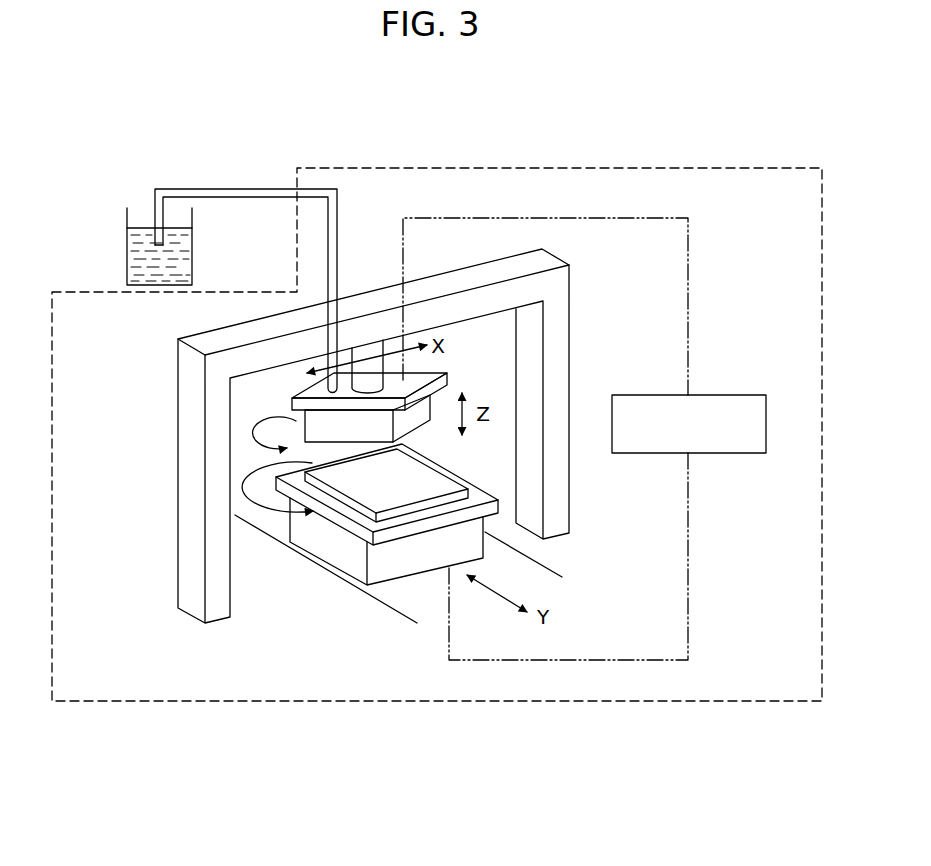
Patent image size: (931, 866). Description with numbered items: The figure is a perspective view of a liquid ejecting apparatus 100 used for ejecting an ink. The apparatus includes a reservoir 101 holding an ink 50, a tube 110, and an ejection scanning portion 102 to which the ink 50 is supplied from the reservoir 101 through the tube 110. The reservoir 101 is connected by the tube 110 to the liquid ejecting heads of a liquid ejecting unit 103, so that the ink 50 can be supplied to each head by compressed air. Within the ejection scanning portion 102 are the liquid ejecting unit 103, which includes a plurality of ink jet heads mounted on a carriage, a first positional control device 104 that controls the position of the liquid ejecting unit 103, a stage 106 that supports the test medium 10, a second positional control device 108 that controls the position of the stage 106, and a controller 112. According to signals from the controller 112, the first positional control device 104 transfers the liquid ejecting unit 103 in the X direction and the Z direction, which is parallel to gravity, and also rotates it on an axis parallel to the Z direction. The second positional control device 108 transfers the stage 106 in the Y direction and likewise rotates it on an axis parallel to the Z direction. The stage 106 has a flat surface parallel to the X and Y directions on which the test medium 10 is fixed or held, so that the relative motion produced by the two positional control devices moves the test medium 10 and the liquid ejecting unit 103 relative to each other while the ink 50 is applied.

The liquid ejecting apparatus 100 is at (596, 137).
The reservoir 101 is at (127, 250).
The ink 50 is at (182, 262).
The tube 110 is at (252, 188).
The controller 112 is at (724, 394).
The liquid ejecting unit 103 is at (433, 402).
The first positional control device 104 is at (190, 528).
The stage 106 is at (358, 573).
The test medium 10 is at (367, 492).
The second positional control device 108 is at (407, 615).
The ejection scanning portion 102 is at (398, 703).